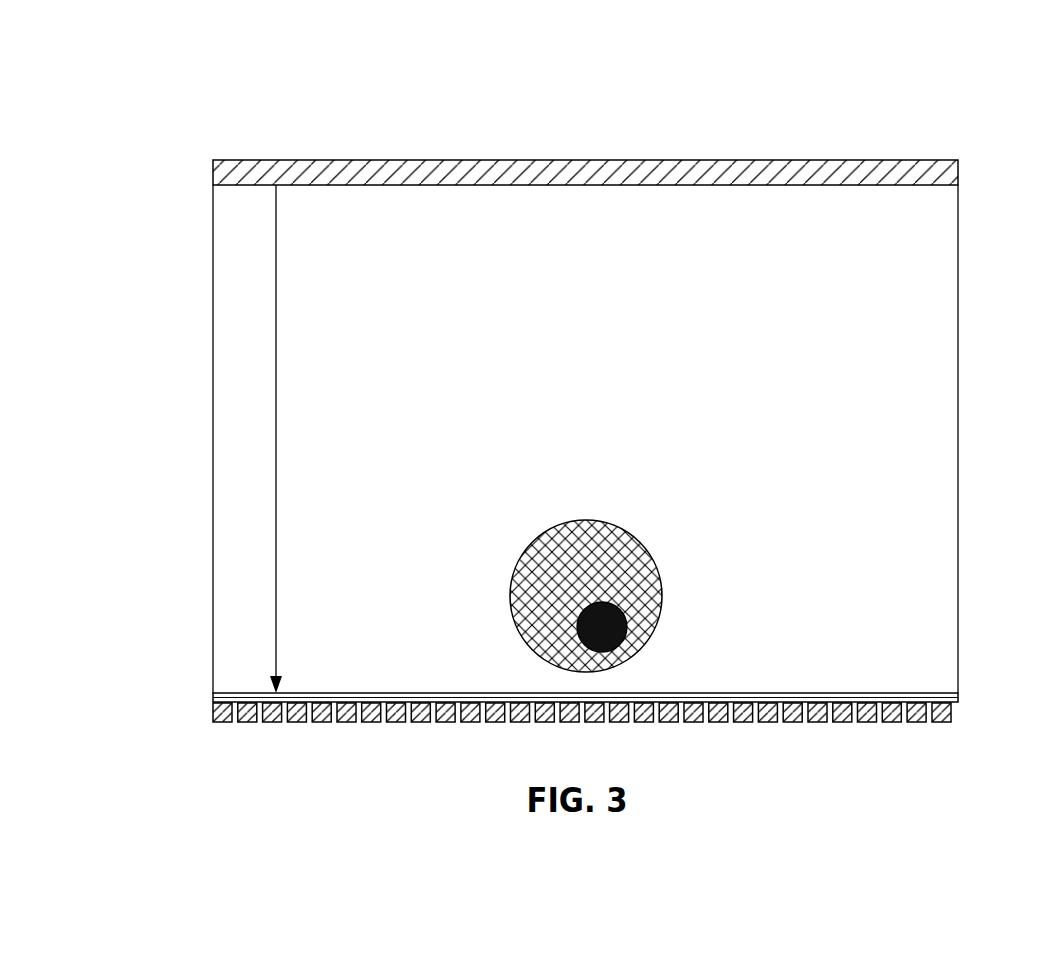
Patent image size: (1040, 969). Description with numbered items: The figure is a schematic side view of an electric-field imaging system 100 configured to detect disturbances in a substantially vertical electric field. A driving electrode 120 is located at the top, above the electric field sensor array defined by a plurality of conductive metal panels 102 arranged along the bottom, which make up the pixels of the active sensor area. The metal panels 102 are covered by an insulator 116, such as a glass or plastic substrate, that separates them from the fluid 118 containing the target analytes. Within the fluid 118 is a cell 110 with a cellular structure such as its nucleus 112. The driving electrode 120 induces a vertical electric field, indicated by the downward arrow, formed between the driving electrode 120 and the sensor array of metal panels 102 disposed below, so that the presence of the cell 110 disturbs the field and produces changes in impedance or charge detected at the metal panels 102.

The electric-field imaging system 100 is at (200, 113).
The conductive metal panels 102 is at (935, 722).
The cell 110 is at (645, 543).
The nucleus 112 is at (627, 627).
The insulator 116 is at (957, 699).
The fluid 118 is at (913, 335).
The driving electrode 120 is at (940, 159).